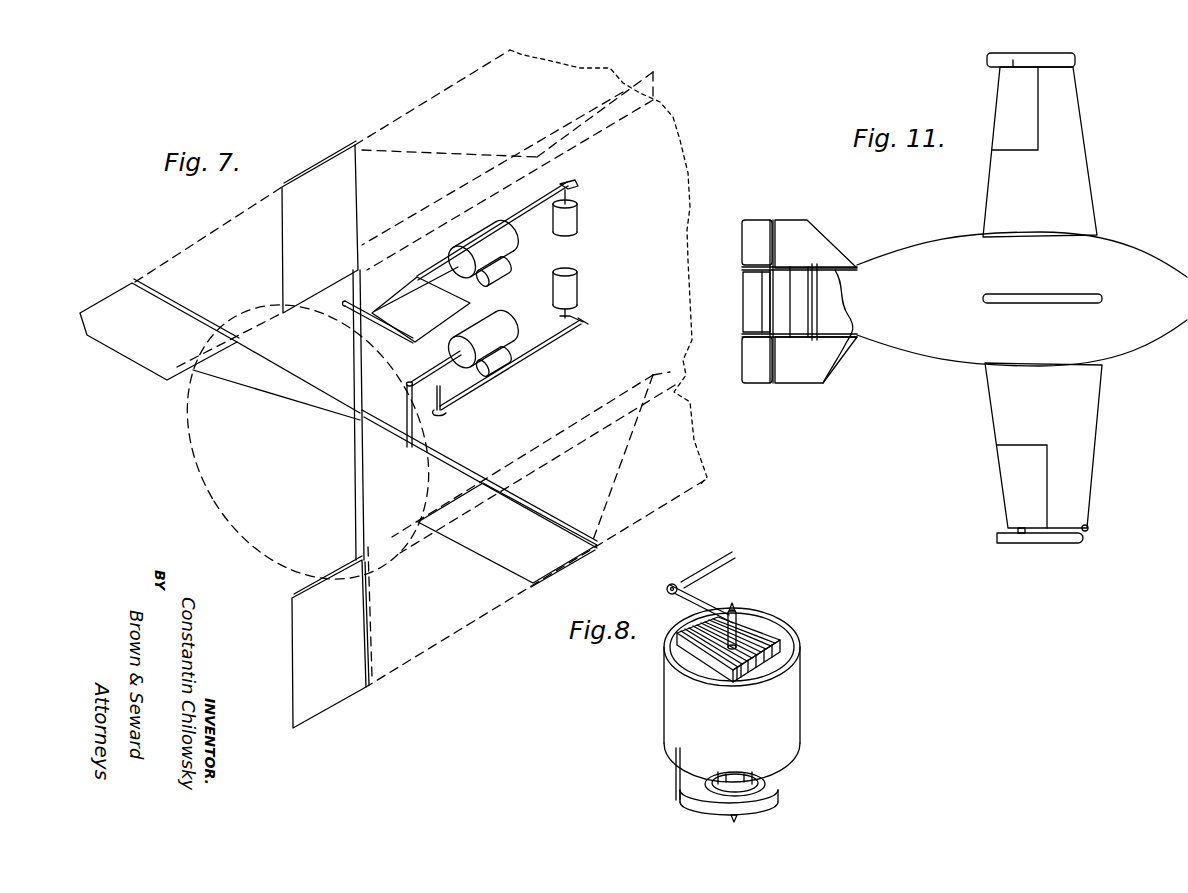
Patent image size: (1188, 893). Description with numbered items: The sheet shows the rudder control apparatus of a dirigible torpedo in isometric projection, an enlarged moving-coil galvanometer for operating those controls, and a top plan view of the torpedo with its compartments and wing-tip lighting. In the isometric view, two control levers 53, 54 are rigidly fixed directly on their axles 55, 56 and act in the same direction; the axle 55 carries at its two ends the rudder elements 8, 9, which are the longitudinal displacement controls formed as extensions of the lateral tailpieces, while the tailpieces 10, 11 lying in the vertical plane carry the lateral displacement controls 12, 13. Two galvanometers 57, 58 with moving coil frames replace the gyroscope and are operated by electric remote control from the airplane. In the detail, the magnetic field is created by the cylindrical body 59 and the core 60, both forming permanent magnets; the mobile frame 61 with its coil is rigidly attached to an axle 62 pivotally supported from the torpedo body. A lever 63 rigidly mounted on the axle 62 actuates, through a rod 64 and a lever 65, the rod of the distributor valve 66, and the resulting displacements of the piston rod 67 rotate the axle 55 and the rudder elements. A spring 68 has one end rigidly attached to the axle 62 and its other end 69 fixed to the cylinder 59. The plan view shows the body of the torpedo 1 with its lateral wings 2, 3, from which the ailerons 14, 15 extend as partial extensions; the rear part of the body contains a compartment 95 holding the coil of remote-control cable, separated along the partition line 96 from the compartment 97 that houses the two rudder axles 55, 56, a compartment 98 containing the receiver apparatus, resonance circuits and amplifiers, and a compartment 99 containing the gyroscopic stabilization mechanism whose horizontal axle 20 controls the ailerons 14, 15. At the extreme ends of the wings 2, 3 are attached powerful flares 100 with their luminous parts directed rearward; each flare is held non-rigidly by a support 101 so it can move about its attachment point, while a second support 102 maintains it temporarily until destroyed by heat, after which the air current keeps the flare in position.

In FIG. 11, the body of the torpedo 1 is at (1150, 336).
In FIG. 11, the lateral wing 2 is at (1090, 194).
In FIG. 11, the lateral wing 3 is at (1097, 418).
In FIG. 7, the longitudinal displacement control 8 is at (133, 362).
In FIG. 11, the longitudinal displacement control 8 is at (762, 217).
In FIG. 7, the longitudinal displacement control 9 is at (533, 578).
In FIG. 11, the longitudinal displacement control 9 is at (760, 384).
In FIG. 7, the tailpiece 10 is at (421, 363).
In FIG. 7, the tailpiece 11 is at (422, 646).
In FIG. 7, the lateral displacement control 12 is at (282, 187).
In FIG. 7, the lateral displacement control 13 is at (350, 693).
In FIG. 11, the aileron 14 is at (996, 112).
In FIG. 11, the aileron 15 is at (1000, 483).
In FIG. 11, the horizontal axle 20 is at (845, 357).
In FIG. 7, the control lever 53 is at (414, 430).
In FIG. 7, the control lever 54 is at (386, 330).
In FIG. 7, the rudder axle 55 is at (307, 390).
In FIG. 11, the rudder axle 55 is at (760, 268).
In FIG. 7, the rudder axle 56 is at (352, 458).
In FIG. 11, the rudder axle 56 is at (745, 337).
In FIG. 7, the galvanometer 57 is at (578, 281).
In FIG. 7, the galvanometer 58 is at (573, 212).
In FIG. 8, the cylindrical body 59 is at (798, 697).
In FIG. 8, the core 60 is at (762, 622).
In FIG. 8, the mobile frame 61 is at (788, 661).
In FIG. 8, the axle 62 is at (738, 608).
In FIG. 7, the lever 63 is at (590, 315).
In FIG. 8, the lever 63 is at (706, 604).
In FIG. 7, the rod 64 is at (545, 343).
In FIG. 8, the rod 64 is at (713, 567).
In FIG. 7, the lever 65 is at (441, 406).
In FIG. 7, the distributor valve 66 is at (505, 354).
In FIG. 7, the piston rod 67 is at (431, 373).
In FIG. 8, the spring 68 is at (775, 797).
In FIG. 8, the end of spring 69 is at (676, 798).
In FIG. 11, the compartment 95 is at (748, 300).
In FIG. 11, the partition line 96 is at (755, 285).
In FIG. 11, the compartment 97 is at (782, 280).
In FIG. 11, the compartment 98 is at (830, 372).
In FIG. 11, the compartment 99 is at (820, 270).
In FIG. 11, the flare 100 is at (988, 62).
In FIG. 11, the support 101 is at (1088, 528).
In FIG. 11, the second support 102 is at (1018, 531).